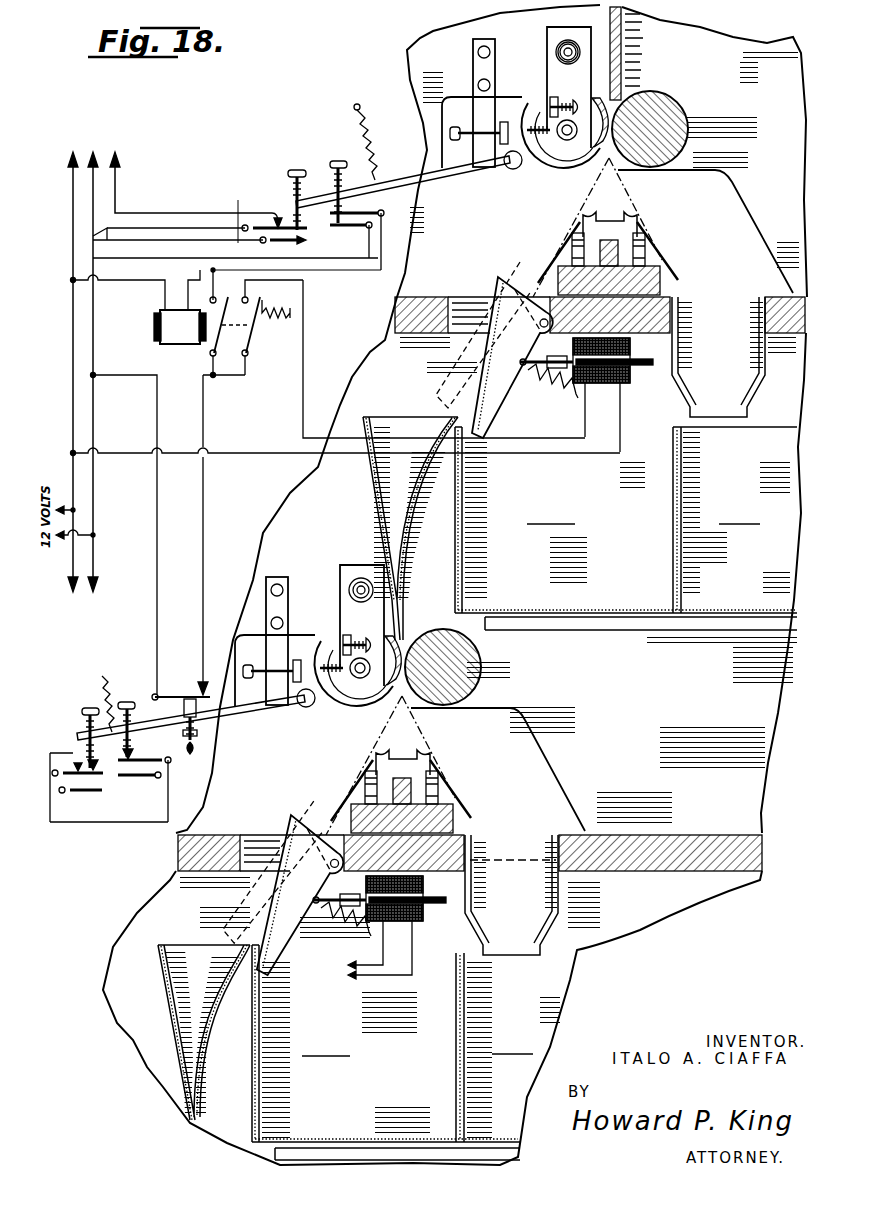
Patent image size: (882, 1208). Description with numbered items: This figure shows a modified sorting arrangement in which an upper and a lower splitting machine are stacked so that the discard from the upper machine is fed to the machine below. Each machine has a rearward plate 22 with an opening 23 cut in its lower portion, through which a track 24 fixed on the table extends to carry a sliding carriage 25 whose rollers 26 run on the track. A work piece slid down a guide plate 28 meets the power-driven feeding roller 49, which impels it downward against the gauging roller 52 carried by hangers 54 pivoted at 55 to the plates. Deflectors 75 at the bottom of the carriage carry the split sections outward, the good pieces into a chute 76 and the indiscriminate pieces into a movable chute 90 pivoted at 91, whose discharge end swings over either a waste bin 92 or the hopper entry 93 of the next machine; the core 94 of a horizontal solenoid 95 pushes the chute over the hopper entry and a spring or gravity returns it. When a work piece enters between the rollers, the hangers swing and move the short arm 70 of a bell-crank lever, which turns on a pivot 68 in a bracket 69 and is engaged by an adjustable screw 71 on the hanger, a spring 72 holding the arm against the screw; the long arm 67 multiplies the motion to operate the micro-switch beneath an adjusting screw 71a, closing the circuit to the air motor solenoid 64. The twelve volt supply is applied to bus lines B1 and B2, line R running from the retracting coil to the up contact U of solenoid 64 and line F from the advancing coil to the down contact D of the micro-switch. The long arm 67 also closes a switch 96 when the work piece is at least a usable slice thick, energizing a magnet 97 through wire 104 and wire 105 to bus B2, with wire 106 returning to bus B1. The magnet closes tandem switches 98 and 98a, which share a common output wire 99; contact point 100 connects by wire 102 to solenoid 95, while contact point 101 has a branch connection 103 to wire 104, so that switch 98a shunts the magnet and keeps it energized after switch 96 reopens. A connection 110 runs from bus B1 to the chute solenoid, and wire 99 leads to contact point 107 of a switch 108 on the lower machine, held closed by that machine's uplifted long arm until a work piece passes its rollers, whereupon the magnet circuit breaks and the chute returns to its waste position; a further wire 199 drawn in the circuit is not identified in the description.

The rearward plate 22 is at (760, 50).
The opening 23 is at (762, 235).
The track 24 is at (662, 285).
The carriage 25 is at (626, 215).
The rollers 26 is at (648, 248).
The guide plate 28 is at (622, 42).
The feeding drum or roller 49 is at (690, 115).
The gauging roller 52 is at (560, 168).
The hangers 54 is at (548, 36).
The pivot 55 is at (556, 54).
The air motor solenoid 64 is at (257, 223).
The long lever arm 67 is at (398, 183).
The pivot 68 is at (510, 169).
The bracket 69 is at (473, 60).
The short vertical arm 70 is at (527, 100).
The adjustable screw 71 is at (571, 102).
The adjusting screw 71a is at (295, 166).
The spring 72 is at (368, 118).
The deflectors 75 is at (555, 257).
The chute 76 is at (766, 383).
The movable chute 90 is at (500, 425).
The pivot 91 is at (522, 350).
The waste bin 92 is at (603, 610).
The hopper entry 93 is at (375, 417).
The core 94 is at (632, 342).
The solenoid 95 is at (630, 380).
The switch 96 is at (382, 210).
The magnet 97 is at (155, 330).
The switch 98 is at (254, 332).
The switch 98a is at (210, 356).
The common output wire 99 is at (204, 402).
The contact point 100 is at (250, 296).
The contact point 101 is at (233, 284).
The connecting wire 102 is at (303, 388).
The branch connection 103 is at (210, 258).
The wire 104 is at (328, 268).
The connecting wire 105 is at (360, 258).
The wire connection 106 is at (118, 282).
The contact point 107 is at (201, 688).
The switch 108 is at (155, 688).
The connection 110 is at (248, 455).
The conductor 199 is at (157, 538).
The main bus line B1 is at (73, 395).
The main bus line B2 is at (94, 433).
The line R is at (87, 143).
The line F is at (189, 173).
The up contact U is at (276, 222).
The downwardly engaged contact D is at (206, 247).